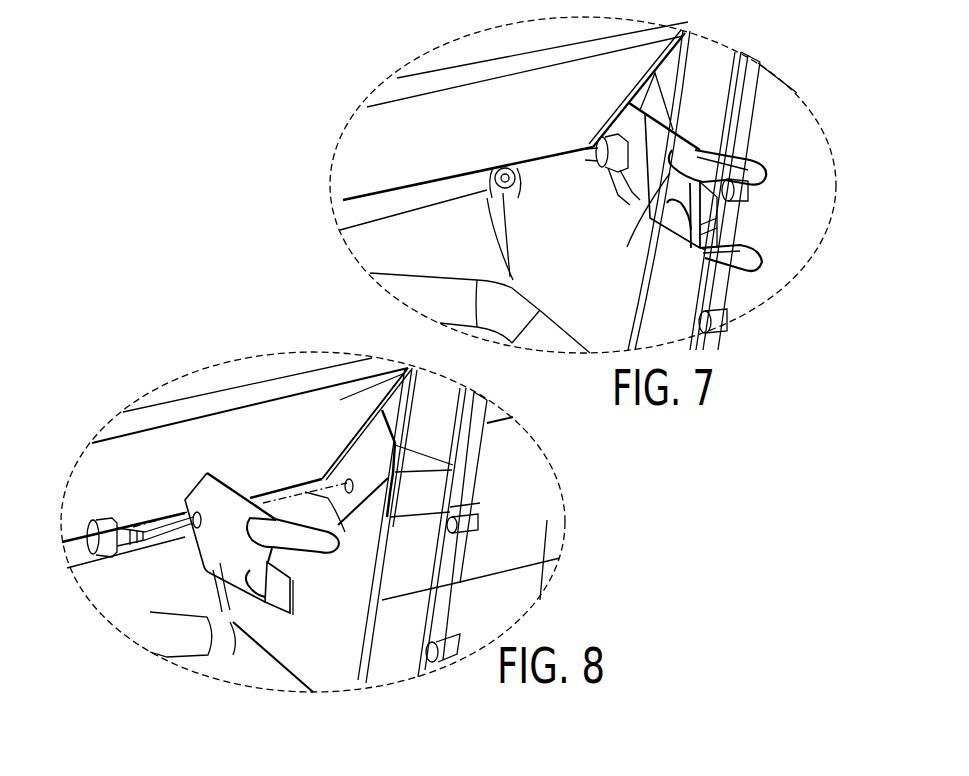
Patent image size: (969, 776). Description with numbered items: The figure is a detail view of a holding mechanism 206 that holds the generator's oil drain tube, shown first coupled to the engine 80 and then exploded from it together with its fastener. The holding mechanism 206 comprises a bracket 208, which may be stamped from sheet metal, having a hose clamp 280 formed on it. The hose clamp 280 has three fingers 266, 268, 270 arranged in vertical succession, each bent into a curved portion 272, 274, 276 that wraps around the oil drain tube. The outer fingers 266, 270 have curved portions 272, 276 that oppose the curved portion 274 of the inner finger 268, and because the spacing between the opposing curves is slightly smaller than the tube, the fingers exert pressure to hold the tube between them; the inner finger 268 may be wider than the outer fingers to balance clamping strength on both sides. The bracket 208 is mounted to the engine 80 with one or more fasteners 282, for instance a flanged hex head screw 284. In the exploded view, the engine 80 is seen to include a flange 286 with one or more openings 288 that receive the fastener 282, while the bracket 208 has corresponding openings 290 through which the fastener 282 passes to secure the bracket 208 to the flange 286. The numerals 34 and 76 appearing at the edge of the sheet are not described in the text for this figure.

In FIG. 7, the frame portion 34 is at (265, 5).
In FIG. 7, the cross member 76 is at (356, 0).
In FIG. 7, the engine 80 is at (482, 145).
In FIG. 8, the engine 80 is at (282, 457).
In FIG. 7, the holding mechanism 206 is at (699, 116).
In FIG. 8, the holding mechanism 206 is at (343, 690).
In FIG. 7, the bracket 208 is at (672, 80).
In FIG. 8, the bracket 208 is at (270, 647).
In FIG. 7, the finger 266 is at (761, 199).
In FIG. 7, the inner finger 268 is at (700, 224).
In FIG. 7, the finger 270 is at (766, 176).
In FIG. 7, the curved portion 272 is at (760, 252).
In FIG. 7, the curved portion 274 is at (740, 208).
In FIG. 7, the curved portion 276 is at (745, 125).
In FIG. 7, the hose clamp 280 is at (751, 284).
In FIG. 7, the fastener 282 is at (590, 178).
In FIG. 8, the fastener 282 is at (113, 572).
In FIG. 7, the flanged hex head screw 284 is at (703, 255).
In FIG. 8, the flanged hex head screw 284 is at (88, 602).
In FIG. 8, the flange 286 is at (372, 440).
In FIG. 8, the opening 288 is at (374, 533).
In FIG. 8, the opening 290 is at (190, 522).